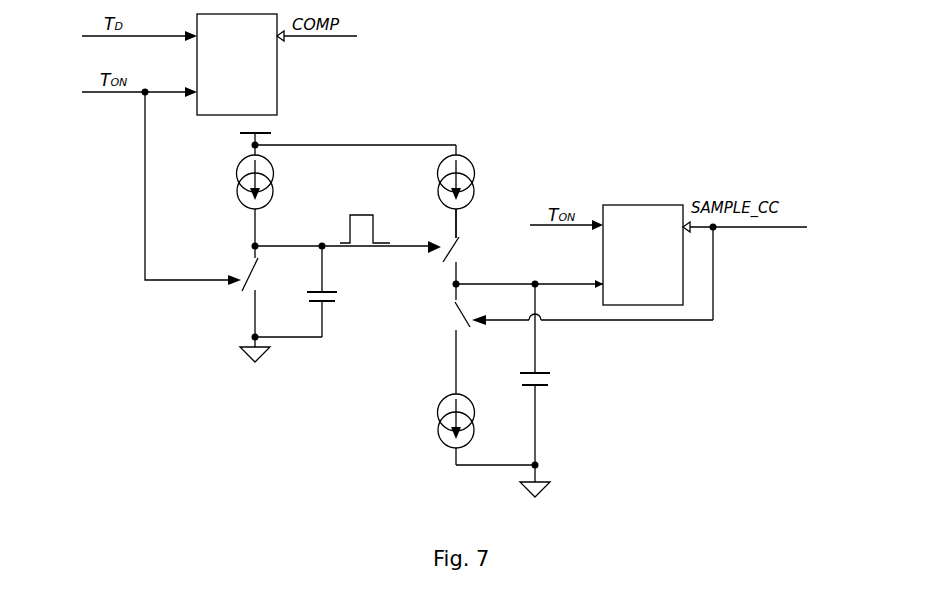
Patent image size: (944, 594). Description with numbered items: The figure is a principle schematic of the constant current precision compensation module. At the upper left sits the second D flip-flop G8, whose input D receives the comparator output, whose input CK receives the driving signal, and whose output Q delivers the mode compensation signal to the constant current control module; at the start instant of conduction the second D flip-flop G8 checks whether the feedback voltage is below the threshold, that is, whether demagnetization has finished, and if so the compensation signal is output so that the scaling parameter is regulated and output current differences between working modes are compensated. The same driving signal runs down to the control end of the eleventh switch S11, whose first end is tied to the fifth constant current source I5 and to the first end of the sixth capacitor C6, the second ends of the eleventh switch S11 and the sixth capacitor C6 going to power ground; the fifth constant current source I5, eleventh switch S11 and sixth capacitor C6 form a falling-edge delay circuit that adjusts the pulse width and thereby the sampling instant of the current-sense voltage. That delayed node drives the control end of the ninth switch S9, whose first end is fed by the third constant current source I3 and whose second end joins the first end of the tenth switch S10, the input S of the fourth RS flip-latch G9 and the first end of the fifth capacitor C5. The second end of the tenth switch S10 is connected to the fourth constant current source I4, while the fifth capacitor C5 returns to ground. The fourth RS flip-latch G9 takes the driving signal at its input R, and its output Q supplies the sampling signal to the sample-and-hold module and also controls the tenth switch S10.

The second D flip-flop G8 is at (237, 64).
The fourth RS flip-latch G9 is at (643, 255).
The fifth constant current source I5 is at (265, 182).
The third constant current source I3 is at (467, 182).
The fourth constant current source I4 is at (468, 421).
The eleventh switch S11 is at (269, 291).
The ninth switch S9 is at (465, 246).
The tenth switch S10 is at (441, 339).
The sixth capacitor C6 is at (336, 291).
The fifth capacitor C5 is at (548, 374).